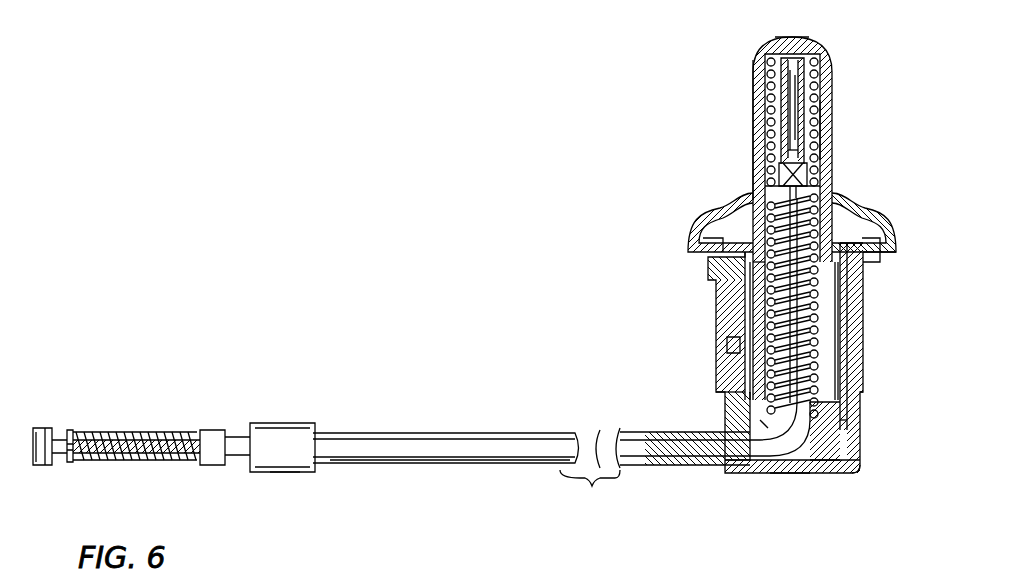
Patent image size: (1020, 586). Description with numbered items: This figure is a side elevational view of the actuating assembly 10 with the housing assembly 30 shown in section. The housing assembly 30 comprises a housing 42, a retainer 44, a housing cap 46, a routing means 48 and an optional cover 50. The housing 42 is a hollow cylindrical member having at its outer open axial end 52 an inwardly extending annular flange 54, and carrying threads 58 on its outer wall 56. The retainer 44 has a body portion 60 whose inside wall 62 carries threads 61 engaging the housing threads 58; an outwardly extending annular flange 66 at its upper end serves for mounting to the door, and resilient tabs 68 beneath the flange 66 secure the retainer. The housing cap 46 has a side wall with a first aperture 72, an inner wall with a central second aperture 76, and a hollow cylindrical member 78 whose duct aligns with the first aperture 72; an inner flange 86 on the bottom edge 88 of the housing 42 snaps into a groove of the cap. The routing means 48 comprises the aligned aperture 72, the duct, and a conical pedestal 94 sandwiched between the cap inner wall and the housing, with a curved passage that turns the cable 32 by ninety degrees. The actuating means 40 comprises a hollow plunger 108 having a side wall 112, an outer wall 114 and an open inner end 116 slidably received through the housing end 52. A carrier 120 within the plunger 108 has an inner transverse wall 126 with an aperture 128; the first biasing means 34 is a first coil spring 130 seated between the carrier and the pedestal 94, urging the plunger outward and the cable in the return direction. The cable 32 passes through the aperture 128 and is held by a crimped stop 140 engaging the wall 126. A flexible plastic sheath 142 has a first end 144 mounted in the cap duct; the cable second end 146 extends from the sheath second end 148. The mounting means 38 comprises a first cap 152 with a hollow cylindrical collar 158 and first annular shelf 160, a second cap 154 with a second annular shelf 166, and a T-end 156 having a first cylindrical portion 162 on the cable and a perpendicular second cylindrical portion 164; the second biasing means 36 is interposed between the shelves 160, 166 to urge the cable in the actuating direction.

The assembly 10 is at (677, 213).
The housing assembly 30 is at (938, 234).
The cable 32 is at (812, 323).
The first biasing means 34 is at (818, 336).
The second biasing means 36 is at (108, 432).
The mounting means 38 is at (267, 395).
The actuating means 40 is at (747, 97).
The housing 42 is at (722, 292).
The retainer 44 is at (858, 310).
The housing cap 46 is at (862, 466).
The routing means 48 is at (753, 426).
The cover 50 is at (879, 213).
The outer open axial end 52 is at (742, 204).
The inwardly extending annular flange 54 is at (848, 204).
The outer wall 56 is at (728, 345).
The threads 58 is at (722, 383).
The body portion 60 is at (866, 290).
The threads 61 is at (864, 380).
The inside wall 62 is at (756, 330).
The outwardly extending annular flange 66 is at (866, 262).
The resilient tabs 68 is at (708, 268).
The first aperture 72 is at (730, 472).
The second aperture 76 is at (788, 473).
The hollow cylindrical member 78 is at (652, 432).
The inner flange 86 is at (862, 425).
The bottom edge 88 is at (842, 445).
The pedestal 94 is at (820, 473).
The plunger 108 is at (831, 92).
The side wall 112 is at (831, 131).
The outer wall 114 is at (789, 38).
The open inner end 116 is at (748, 312).
The carrier 120 is at (774, 66).
The inner transverse wall 126 is at (770, 194).
The aperture 128 is at (818, 183).
The first coil spring 130 is at (771, 99).
The stop 140 is at (786, 139).
The flexible plastic sheath 142 is at (428, 437).
The first end 144 is at (605, 438).
The second end 146 is at (152, 455).
The second end 148 is at (334, 462).
The first cap 152 is at (295, 421).
The second cap 154 is at (70, 430).
The T-end 156 is at (44, 428).
The hollow cylindrical collar 158 is at (286, 473).
The first annular shelf 160 is at (210, 430).
The first cylindrical portion 162 is at (58, 455).
The second cylindrical portion 164 is at (36, 465).
The second annular shelf 166 is at (76, 456).